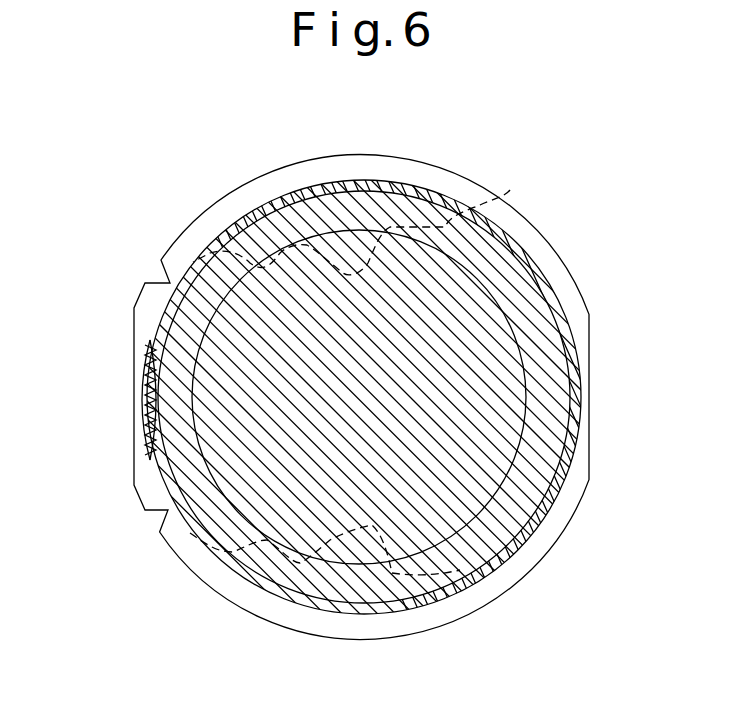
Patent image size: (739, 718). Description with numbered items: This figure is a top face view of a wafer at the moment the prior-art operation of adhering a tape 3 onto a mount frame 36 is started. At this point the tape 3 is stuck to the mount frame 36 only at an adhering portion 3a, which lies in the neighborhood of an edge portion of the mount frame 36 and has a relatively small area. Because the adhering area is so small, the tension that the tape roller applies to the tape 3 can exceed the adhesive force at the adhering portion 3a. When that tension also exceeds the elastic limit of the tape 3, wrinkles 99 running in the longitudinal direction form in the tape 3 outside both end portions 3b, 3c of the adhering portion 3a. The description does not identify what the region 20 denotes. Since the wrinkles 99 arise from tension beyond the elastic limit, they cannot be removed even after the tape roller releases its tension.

The tape 3 is at (442, 602).
The adhering portion 3a is at (145, 397).
The end portion of the adhering portion 3b is at (145, 365).
The end portion of the adhering portion 3c is at (145, 442).
The effective aperture region 20 is at (457, 503).
The mount frame 36 is at (563, 272).
The wrinkles 99 is at (510, 190).